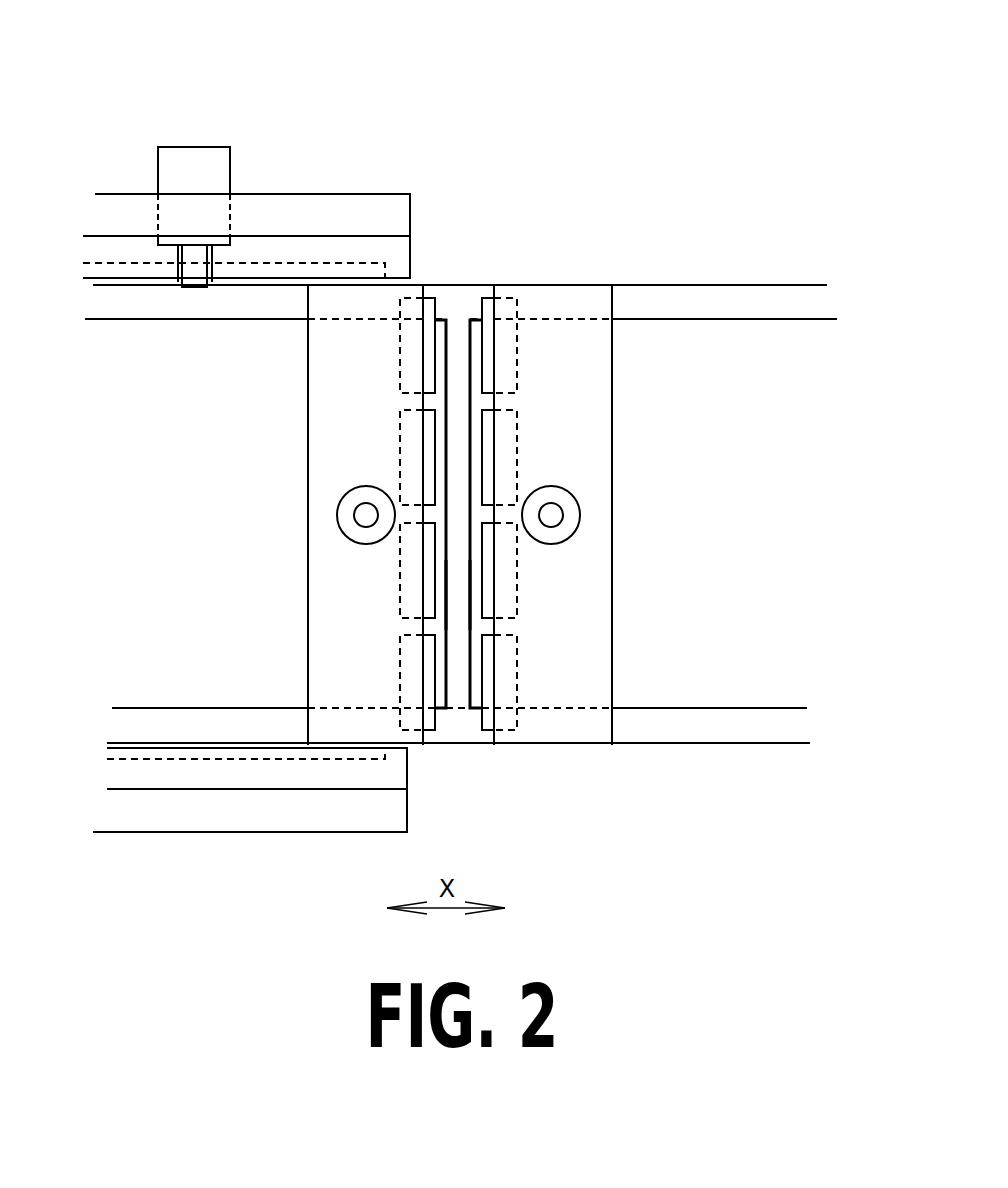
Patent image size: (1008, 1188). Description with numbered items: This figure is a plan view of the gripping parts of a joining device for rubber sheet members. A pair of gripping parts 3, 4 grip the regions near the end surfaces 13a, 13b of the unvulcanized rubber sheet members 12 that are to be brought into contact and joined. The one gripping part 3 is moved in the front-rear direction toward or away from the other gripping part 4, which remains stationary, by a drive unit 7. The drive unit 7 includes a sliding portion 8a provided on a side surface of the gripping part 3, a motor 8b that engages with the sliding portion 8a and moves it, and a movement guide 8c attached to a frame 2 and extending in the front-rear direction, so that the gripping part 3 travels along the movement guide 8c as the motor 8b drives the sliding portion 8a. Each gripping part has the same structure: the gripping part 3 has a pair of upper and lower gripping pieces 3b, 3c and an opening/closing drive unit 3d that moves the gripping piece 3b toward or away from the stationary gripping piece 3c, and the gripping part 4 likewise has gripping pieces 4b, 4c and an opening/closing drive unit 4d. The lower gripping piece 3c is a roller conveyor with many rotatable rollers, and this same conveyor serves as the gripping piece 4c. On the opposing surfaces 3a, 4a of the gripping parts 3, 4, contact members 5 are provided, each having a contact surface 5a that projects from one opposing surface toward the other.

The frame 2 is at (122, 193).
The gripping part 3 is at (320, 470).
The opposing surface 3a is at (441, 718).
The gripping piece 3b is at (315, 540).
The gripping piece 3c is at (163, 725).
The opening/closing drive unit 3d is at (355, 490).
The gripping part 4 is at (603, 470).
The opposing surface 4a is at (477, 718).
The gripping piece 4b is at (605, 545).
The gripping piece 4c is at (680, 308).
The opening/closing drive unit 4d is at (565, 490).
The contact member 5 is at (430, 352).
The contact surface 5a is at (440, 485).
The drive unit 7 is at (242, 142).
The sliding portion 8a is at (345, 265).
The motor 8b is at (196, 162).
The movement guide 8c is at (290, 245).
The rubber sheet member 12 is at (123, 327).
The end surface 13a is at (450, 585).
The end surface 13b is at (465, 600).